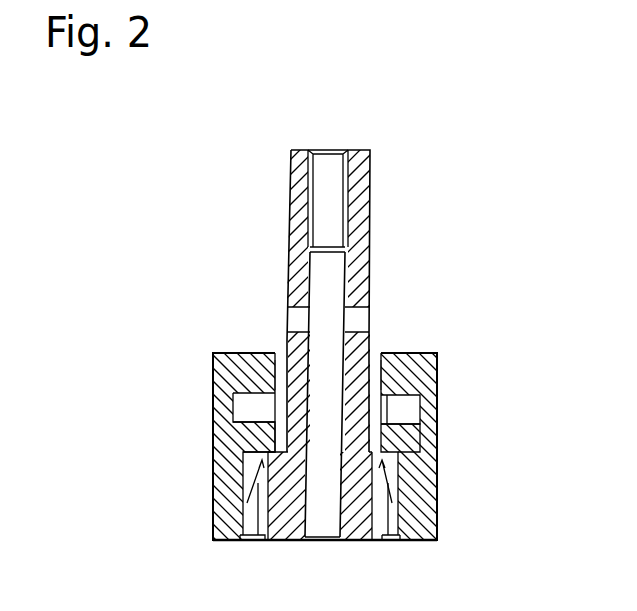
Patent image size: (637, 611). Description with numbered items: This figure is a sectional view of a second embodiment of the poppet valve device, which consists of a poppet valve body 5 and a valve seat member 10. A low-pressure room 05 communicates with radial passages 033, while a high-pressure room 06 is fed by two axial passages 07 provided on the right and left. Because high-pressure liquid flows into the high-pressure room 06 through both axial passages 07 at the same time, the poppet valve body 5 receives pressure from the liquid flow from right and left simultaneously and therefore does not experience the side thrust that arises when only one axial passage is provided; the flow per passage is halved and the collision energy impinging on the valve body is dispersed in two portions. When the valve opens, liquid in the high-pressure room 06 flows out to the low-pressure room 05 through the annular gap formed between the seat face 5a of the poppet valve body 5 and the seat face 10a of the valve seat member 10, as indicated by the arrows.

The poppet valve body 5 is at (357, 273).
The valve seat member 10 is at (405, 353).
The low-pressure room 05 is at (252, 358).
The radial passages 033 is at (240, 405).
The high-pressure room 06 is at (222, 460).
The axial passage 07 is at (225, 520).
The seat face 10a is at (387, 413).
The seat face 5a is at (437, 448).